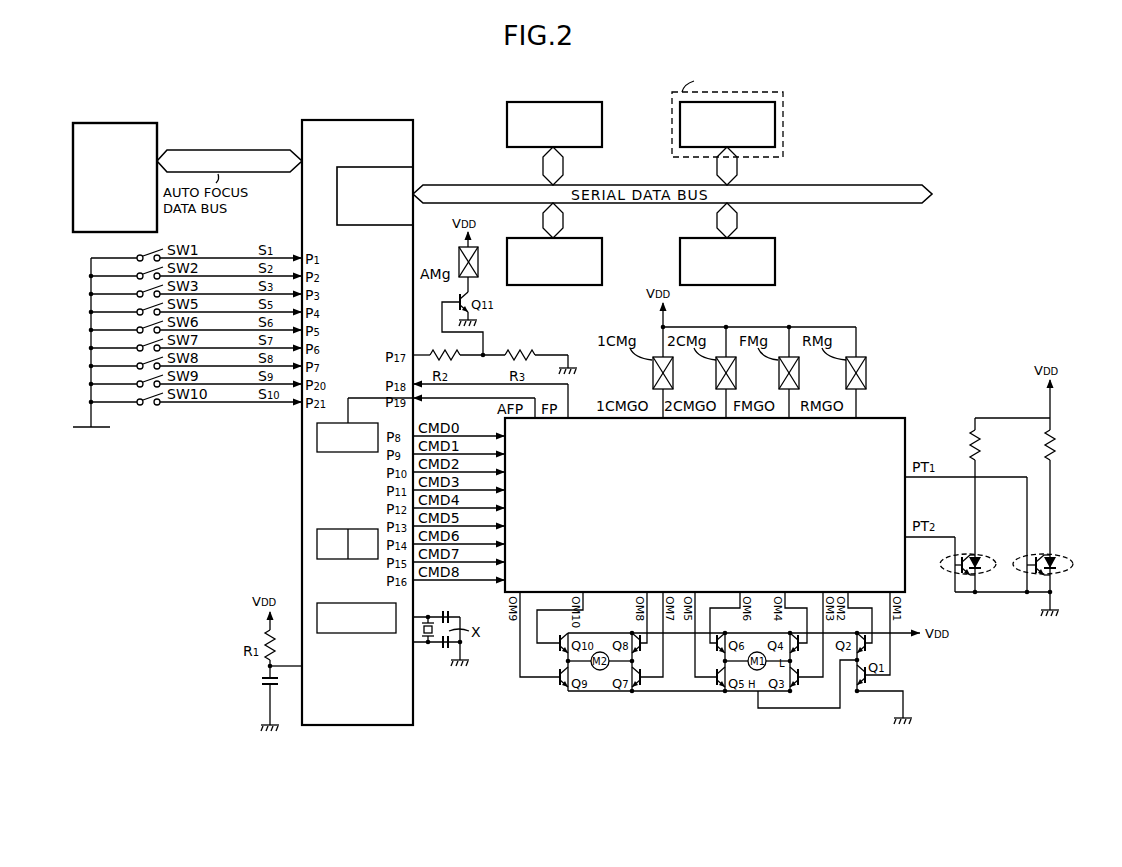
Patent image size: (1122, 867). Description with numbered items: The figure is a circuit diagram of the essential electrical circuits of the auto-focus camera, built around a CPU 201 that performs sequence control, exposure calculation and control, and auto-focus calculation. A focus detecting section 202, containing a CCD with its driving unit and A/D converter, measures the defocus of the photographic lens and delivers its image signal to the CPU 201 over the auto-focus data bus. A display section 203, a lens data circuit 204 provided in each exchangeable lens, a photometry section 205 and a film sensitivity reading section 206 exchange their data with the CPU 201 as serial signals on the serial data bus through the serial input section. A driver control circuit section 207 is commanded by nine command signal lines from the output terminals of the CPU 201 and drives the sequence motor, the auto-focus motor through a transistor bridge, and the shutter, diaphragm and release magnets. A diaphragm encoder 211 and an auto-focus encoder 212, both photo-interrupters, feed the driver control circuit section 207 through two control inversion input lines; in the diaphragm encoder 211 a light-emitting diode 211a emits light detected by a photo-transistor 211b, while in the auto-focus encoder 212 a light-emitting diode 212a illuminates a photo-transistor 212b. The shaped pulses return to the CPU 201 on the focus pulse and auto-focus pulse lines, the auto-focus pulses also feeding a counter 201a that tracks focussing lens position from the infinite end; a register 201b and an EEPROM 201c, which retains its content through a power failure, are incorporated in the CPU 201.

The CPU 201 is at (346, 120).
The counter 201a is at (317, 436).
The register in CPU 201b is at (317, 535).
The EEPROM 201c is at (317, 610).
The focus detecting section 202 is at (120, 123).
The display section 203 is at (507, 115).
The lens data circuit 204 is at (775, 114).
The photometry section 205 is at (602, 248).
The film sensitivity reading section 206 is at (775, 248).
The driver control circuit section 207 is at (885, 418).
The diaphragm encoder 211 is at (1071, 557).
The light-emitting diode 211a is at (1060, 573).
The photo-transistor 211b is at (1036, 557).
The auto-focus encoder 212 is at (981, 553).
The light emitting element of photo interrupter 212 212a is at (982, 576).
The photo-transistor 212b is at (955, 568).